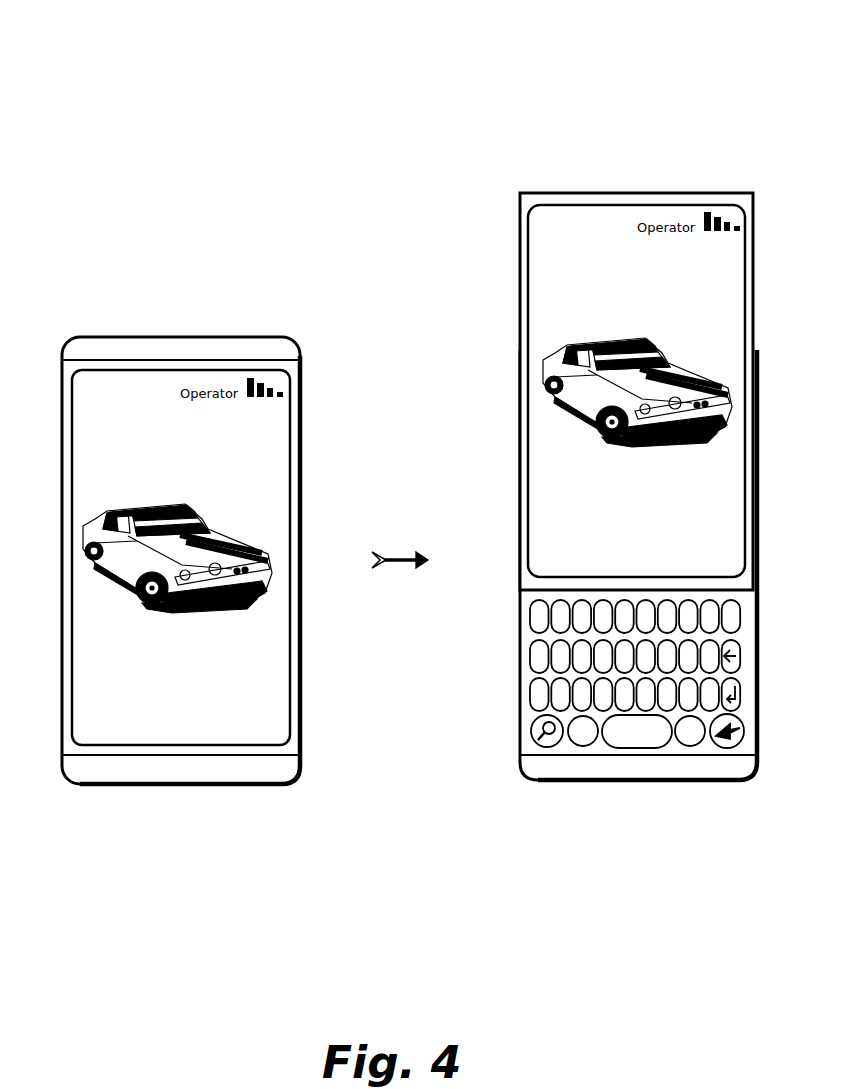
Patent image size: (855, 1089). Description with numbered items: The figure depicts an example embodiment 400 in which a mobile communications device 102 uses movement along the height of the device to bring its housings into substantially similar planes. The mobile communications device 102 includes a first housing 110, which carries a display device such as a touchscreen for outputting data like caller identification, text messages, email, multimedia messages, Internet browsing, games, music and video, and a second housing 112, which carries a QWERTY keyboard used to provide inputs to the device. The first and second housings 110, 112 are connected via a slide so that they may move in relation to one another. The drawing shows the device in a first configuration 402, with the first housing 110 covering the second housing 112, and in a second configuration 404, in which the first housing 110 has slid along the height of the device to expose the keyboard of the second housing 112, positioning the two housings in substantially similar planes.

The example embodiment 400 is at (163, 52).
The mobile communications device 102 is at (77, 337).
The first housing 110 is at (63, 558).
The second housing 112 is at (524, 673).
The first configuration 402 is at (106, 834).
The second configuration 404 is at (484, 834).